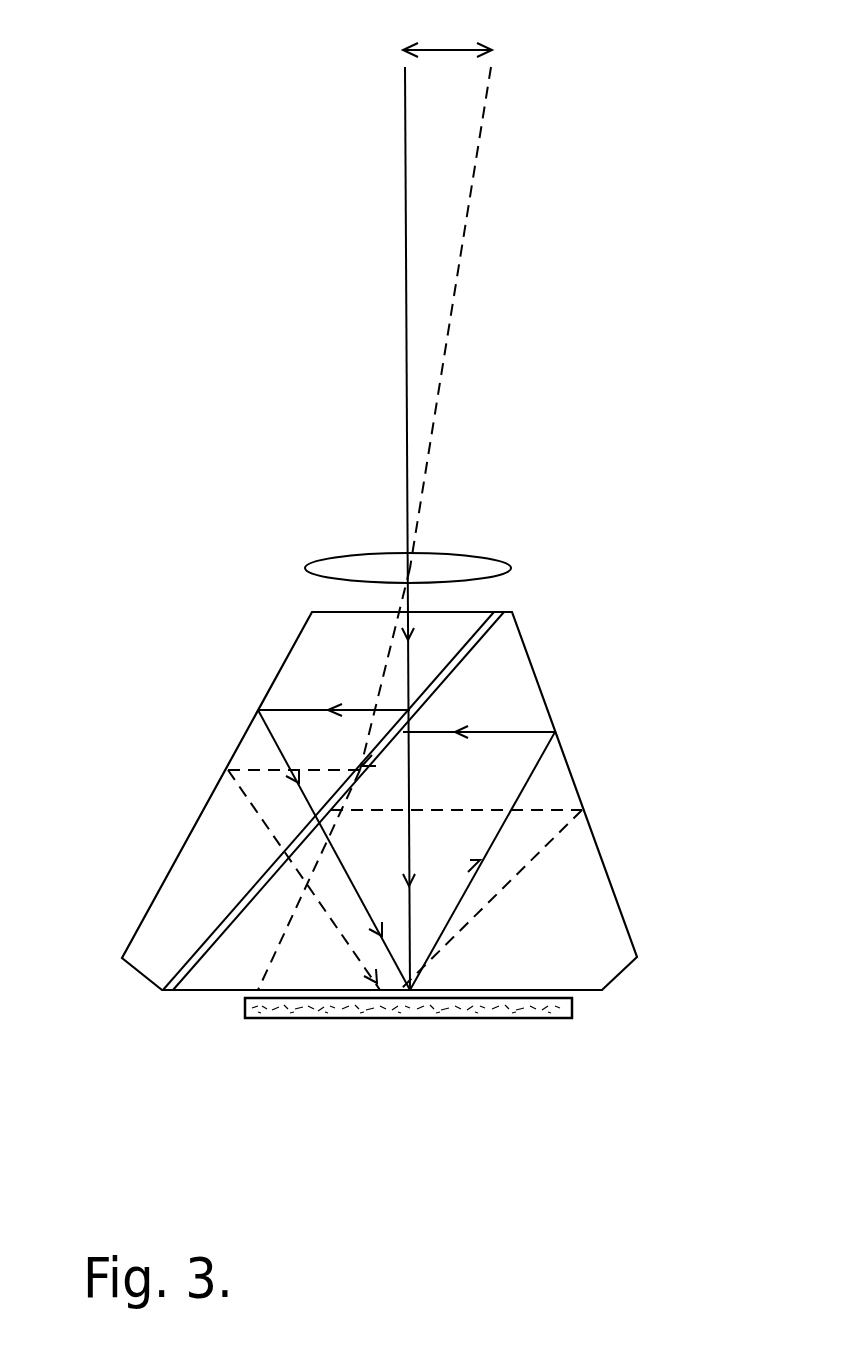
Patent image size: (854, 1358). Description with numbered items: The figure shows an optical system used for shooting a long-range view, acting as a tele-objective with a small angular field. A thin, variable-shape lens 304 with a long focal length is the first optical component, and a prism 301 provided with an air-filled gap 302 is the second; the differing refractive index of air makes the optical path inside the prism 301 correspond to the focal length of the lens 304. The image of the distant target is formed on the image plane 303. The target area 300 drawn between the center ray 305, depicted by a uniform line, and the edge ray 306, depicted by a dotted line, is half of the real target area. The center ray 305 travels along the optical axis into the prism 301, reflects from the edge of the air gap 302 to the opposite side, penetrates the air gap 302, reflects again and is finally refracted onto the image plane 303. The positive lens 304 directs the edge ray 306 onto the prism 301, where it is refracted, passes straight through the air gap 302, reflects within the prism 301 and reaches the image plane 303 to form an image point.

The target area 300 is at (440, 47).
The prism 301 is at (572, 780).
The air-filled gap 302 is at (271, 847).
The image plane 303 is at (510, 1020).
The variable-shape lens 304 is at (513, 572).
The center ray 305 is at (403, 177).
The edge ray 306 is at (473, 180).